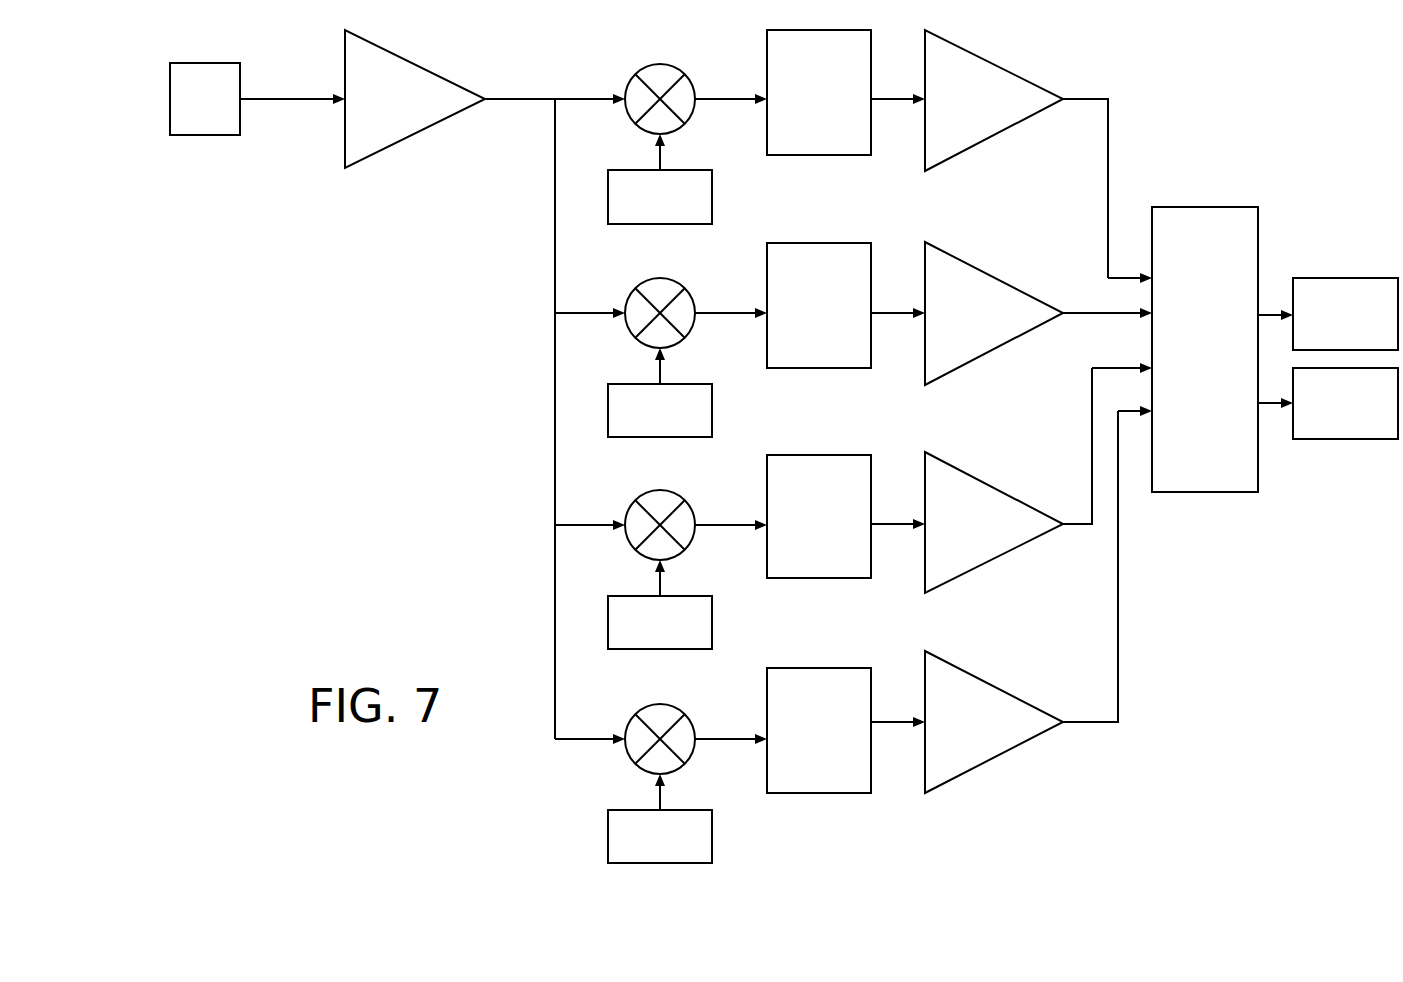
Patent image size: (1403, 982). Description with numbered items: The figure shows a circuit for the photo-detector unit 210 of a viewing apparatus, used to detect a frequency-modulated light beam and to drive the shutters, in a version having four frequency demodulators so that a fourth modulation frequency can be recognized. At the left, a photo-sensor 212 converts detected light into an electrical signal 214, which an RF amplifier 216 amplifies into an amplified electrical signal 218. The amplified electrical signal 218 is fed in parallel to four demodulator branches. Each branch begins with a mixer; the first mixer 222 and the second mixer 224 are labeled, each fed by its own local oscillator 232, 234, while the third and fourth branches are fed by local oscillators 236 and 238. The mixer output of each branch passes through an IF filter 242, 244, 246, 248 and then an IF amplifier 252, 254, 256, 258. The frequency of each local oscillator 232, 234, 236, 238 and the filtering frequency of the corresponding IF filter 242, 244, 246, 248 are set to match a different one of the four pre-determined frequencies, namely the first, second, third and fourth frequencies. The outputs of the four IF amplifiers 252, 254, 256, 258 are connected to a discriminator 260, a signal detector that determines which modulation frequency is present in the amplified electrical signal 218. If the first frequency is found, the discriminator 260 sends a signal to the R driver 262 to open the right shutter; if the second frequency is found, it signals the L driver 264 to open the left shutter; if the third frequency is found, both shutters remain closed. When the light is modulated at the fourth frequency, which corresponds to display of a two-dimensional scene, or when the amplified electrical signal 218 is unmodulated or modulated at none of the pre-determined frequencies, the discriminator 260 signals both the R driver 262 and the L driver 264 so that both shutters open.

The photo-detector unit 210 is at (391, 415).
The photo-sensor 212 is at (185, 135).
The electrical signal 214 is at (247, 100).
The RF amplifier 216 is at (388, 147).
The amplified electrical signal 218 is at (497, 97).
The mixer 222 is at (660, 62).
The mixer 224 is at (655, 278).
The local oscillator 232 is at (655, 224).
The local oscillator 234 is at (640, 437).
The local oscillator 236 is at (650, 649).
The local oscillator 238 is at (608, 838).
The IF filter 242 is at (820, 155).
The IF filter 244 is at (842, 368).
The IF filter 246 is at (837, 578).
The IF filter 248 is at (847, 793).
The IF amplifier 252 is at (980, 143).
The IF amplifier 254 is at (978, 358).
The IF amplifier 256 is at (968, 573).
The IF amplifier 258 is at (973, 772).
The discriminator 260 is at (1200, 492).
The R driver 262 is at (1312, 278).
The L driver 264 is at (1312, 439).